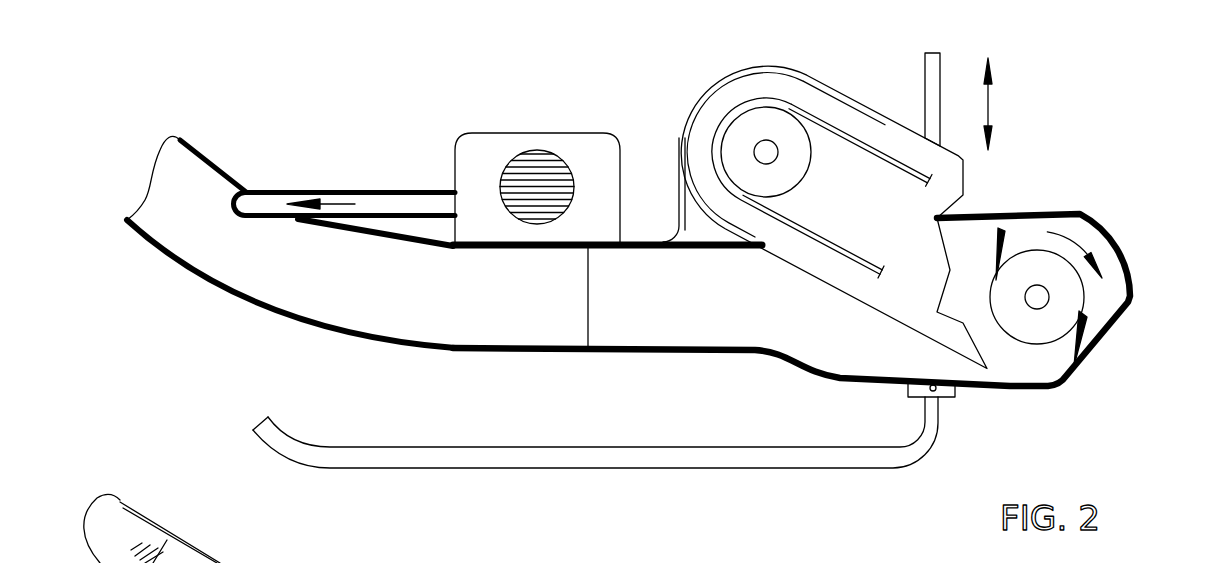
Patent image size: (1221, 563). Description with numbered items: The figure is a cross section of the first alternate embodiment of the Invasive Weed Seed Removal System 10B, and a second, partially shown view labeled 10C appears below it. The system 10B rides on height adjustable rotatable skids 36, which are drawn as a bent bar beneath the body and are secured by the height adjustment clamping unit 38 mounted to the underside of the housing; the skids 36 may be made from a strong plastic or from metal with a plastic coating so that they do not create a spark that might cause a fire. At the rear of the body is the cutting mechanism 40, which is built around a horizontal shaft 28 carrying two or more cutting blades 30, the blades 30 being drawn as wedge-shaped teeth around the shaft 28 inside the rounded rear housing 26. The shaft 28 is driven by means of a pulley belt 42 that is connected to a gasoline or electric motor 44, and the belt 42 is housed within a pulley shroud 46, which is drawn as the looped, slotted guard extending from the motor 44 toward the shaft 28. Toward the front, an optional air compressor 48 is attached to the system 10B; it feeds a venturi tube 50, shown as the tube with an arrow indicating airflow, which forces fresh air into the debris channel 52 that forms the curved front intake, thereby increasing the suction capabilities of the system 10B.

The Invasive Weed Seed Removal System 10B is at (152, 92).
The skate assembly (third embodiment) 10C is at (158, 438).
The base housing 26 is at (1118, 243).
The horizontal shaft 28 is at (1030, 330).
The cutting blades 30 is at (1003, 240).
The height adjustable rotatable skids 36 is at (408, 460).
The height adjustment clamping unit 38 is at (940, 410).
The cutting mechanism 40 is at (1063, 288).
The pulley belt 42 is at (897, 167).
The motor 44 is at (708, 95).
The pulley shroud 46 is at (870, 107).
The air compressor 48 is at (505, 147).
The venturi tube 50 is at (258, 205).
The debris channel 52 is at (263, 262).